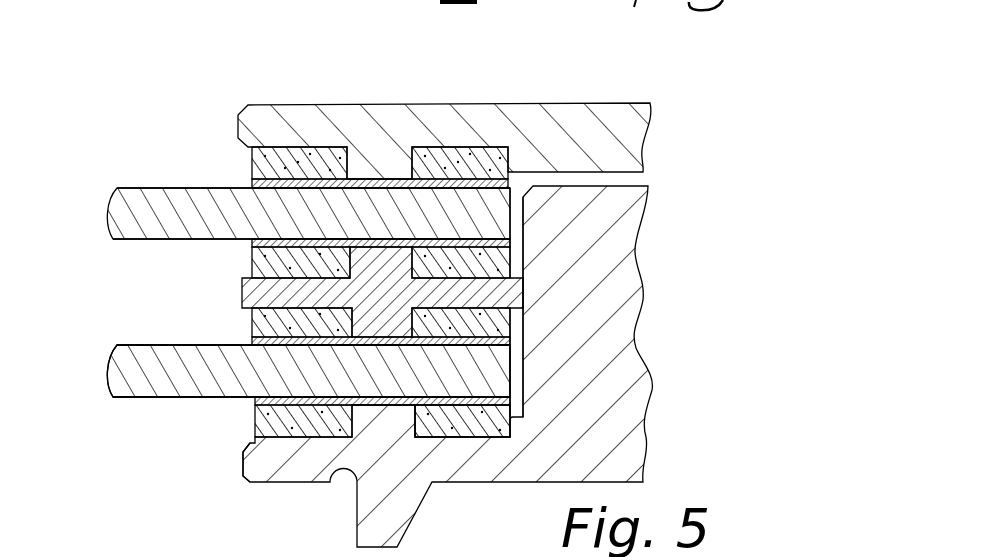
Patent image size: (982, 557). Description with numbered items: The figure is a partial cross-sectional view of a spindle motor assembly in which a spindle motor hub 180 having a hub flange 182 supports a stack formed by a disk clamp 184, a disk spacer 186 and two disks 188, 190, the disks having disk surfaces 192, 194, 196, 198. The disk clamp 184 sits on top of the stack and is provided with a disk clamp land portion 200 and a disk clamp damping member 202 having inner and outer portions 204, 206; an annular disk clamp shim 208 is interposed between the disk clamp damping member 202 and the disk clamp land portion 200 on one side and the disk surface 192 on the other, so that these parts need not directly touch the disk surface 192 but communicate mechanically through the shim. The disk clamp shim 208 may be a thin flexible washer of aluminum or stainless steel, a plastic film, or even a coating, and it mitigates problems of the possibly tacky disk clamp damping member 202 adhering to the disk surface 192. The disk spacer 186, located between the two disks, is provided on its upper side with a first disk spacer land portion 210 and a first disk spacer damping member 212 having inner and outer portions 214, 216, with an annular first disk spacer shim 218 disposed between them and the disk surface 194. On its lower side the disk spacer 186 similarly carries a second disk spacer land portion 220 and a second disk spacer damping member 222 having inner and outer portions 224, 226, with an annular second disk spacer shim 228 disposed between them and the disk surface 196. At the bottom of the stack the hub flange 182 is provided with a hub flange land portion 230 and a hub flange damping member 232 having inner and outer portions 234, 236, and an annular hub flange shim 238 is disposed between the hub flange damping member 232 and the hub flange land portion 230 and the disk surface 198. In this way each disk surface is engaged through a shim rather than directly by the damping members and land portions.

The spindle motor hub 180 is at (648, 439).
The hub flange 182 is at (247, 462).
The disk clamp 184 is at (518, 106).
The disk spacer 186 is at (570, 298).
The disk 188 is at (108, 211).
The disk 190 is at (108, 369).
The disk surface 192 is at (117, 188).
The disk surface 194 is at (128, 250).
The disk surface 196 is at (117, 345).
The disk surface 198 is at (128, 408).
The disk clamp land portion 200 is at (385, 168).
The disk clamp damping member 202 is at (373, 28).
The inner portion 204 is at (460, 147).
The outer portion 206 is at (302, 179).
The disk clamp shim 208 is at (252, 180).
The first disk spacer land portion 210 is at (400, 300).
The first disk spacer damping member 212 is at (717, 155).
The inner portion 214 is at (335, 240).
The outer portion 216 is at (265, 240).
The first disk spacer shim 218 is at (253, 247).
The second disk spacer land portion 220 is at (418, 262).
The second disk spacer damping member 222 is at (707, 343).
The inner portion 224 is at (478, 345).
The outer portion 226 is at (330, 347).
The second disk spacer shim 228 is at (254, 340).
The hub flange land portion 230 is at (412, 410).
The hub flange damping member 232 is at (125, 427).
The inner portion 234 is at (500, 397).
The outer portion 236 is at (257, 412).
The hub flange shim 238 is at (485, 437).